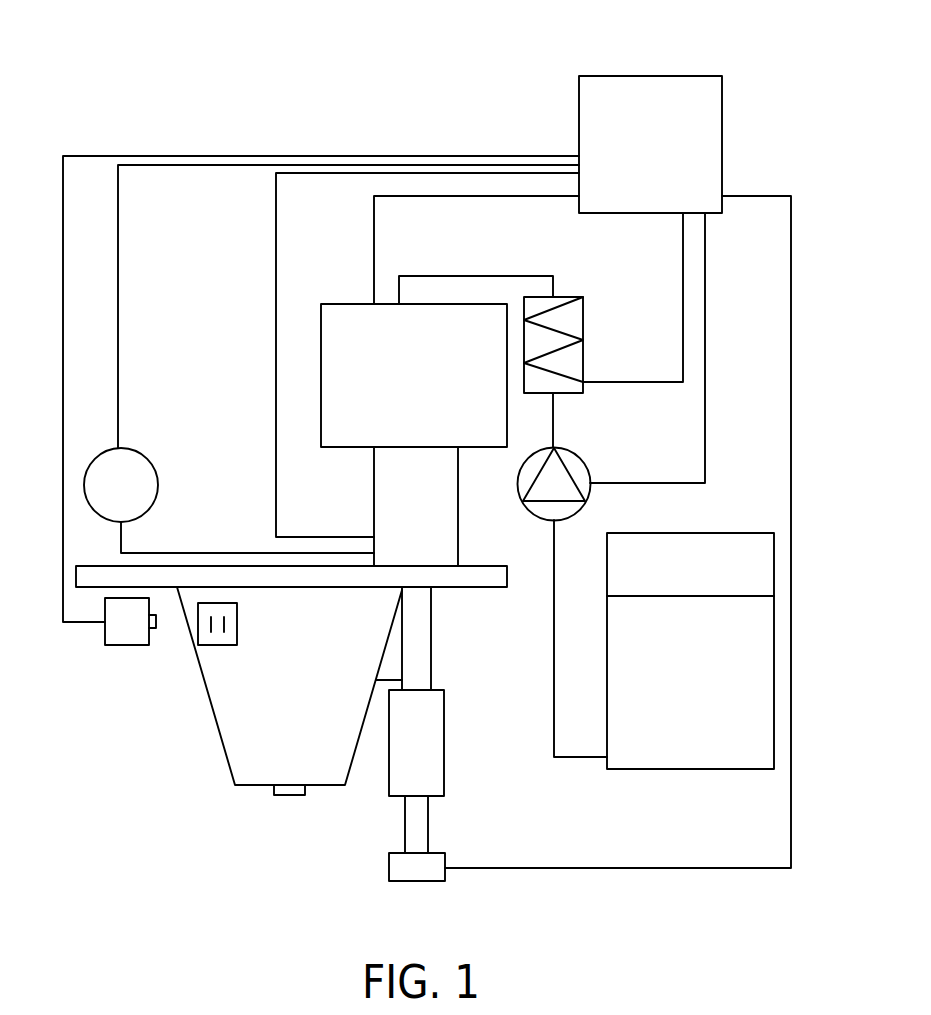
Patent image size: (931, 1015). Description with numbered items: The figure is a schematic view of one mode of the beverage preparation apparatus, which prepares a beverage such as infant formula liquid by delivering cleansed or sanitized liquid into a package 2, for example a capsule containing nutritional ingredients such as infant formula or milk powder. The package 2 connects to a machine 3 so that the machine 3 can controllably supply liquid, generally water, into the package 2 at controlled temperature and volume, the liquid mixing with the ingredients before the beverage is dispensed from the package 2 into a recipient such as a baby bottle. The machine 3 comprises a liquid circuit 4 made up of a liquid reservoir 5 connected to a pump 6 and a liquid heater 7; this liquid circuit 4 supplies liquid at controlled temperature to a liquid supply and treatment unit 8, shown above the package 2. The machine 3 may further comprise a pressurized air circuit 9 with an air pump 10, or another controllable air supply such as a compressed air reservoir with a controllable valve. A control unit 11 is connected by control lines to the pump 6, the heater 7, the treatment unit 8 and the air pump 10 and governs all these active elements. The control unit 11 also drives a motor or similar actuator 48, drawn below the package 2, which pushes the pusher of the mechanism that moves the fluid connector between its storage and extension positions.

The package 2 is at (216, 722).
The machine 3 is at (464, 108).
The liquid circuit 4 is at (552, 647).
The liquid reservoir 5 is at (683, 772).
The pump 6 is at (583, 460).
The liquid heater 7 is at (586, 329).
The liquid supply and treatment unit 8 is at (327, 300).
The pressurized air circuit 9 is at (226, 553).
The air pump 10 is at (152, 468).
The control unit 11 is at (657, 76).
The actuator 48 is at (414, 882).